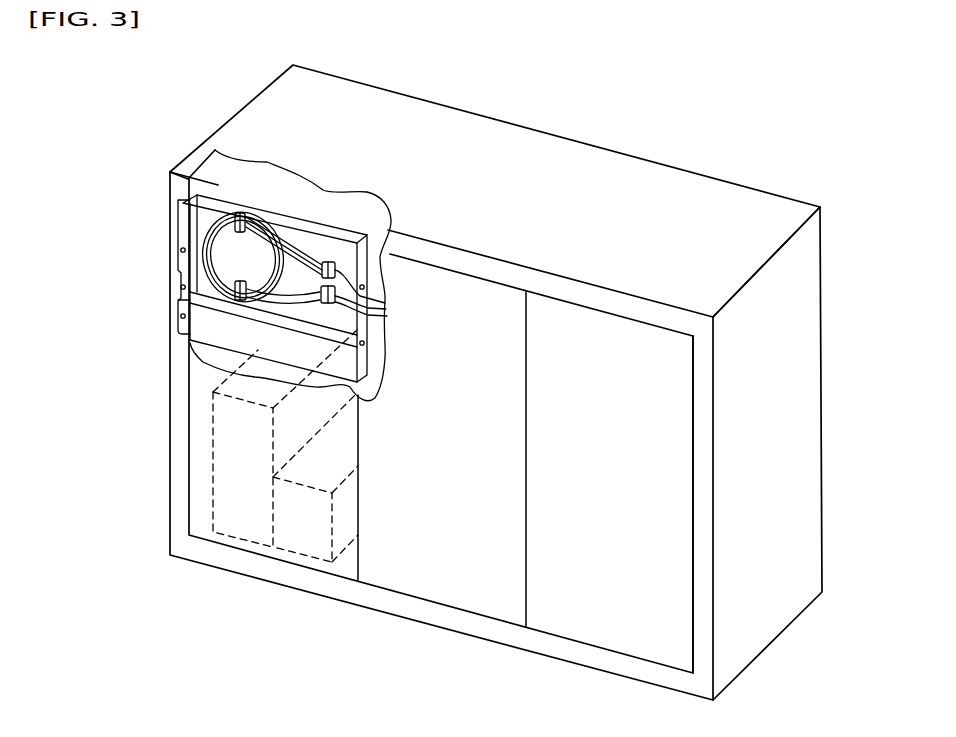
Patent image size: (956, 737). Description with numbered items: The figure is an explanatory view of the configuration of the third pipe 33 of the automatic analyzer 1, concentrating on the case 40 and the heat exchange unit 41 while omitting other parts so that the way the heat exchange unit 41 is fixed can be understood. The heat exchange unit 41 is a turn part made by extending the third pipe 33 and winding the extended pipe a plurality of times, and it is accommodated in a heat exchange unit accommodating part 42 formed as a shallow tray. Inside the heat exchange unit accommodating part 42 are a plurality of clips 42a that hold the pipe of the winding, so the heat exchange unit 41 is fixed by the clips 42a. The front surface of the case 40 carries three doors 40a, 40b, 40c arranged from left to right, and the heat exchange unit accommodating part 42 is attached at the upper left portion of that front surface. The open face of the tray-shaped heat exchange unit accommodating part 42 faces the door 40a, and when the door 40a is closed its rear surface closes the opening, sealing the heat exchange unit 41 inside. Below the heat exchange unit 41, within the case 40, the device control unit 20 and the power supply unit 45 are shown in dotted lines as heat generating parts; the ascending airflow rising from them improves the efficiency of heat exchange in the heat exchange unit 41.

The automatic analyzer 1 is at (854, 509).
The device control unit 20 is at (232, 548).
The third pipe 33 is at (377, 297).
The case 40 is at (780, 155).
The door 40a is at (347, 566).
The door 40b is at (450, 588).
The door 40c is at (605, 634).
The heat exchange unit 41 is at (208, 239).
The heat exchange unit accommodating part 42 is at (326, 262).
The clips 42a is at (240, 212).
The power supply unit 45 is at (295, 553).